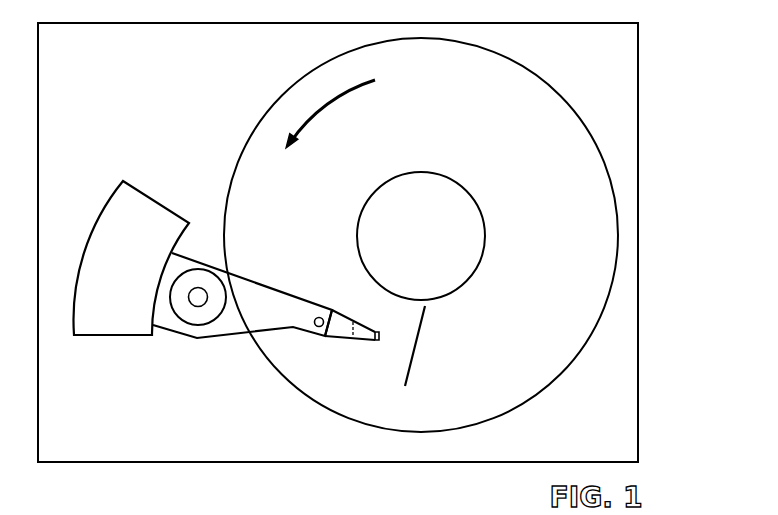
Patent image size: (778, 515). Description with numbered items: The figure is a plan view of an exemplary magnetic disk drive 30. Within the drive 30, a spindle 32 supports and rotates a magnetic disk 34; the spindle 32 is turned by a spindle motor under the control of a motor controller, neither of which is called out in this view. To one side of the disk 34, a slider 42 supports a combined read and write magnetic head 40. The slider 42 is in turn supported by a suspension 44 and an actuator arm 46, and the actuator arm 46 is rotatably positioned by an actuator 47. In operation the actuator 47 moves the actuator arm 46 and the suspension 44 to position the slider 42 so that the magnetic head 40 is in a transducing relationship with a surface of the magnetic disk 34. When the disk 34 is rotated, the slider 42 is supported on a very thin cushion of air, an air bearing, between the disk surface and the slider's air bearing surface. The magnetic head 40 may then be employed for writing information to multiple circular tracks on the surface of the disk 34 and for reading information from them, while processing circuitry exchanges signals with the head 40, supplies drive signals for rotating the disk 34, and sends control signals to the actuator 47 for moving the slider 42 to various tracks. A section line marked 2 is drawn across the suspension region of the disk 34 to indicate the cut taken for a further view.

The magnetic disk drive 30 is at (658, 60).
The spindle 32 is at (460, 183).
The magnetic disk 34 is at (538, 256).
The magnetic head 40 is at (378, 341).
The slider 42 is at (378, 331).
The suspension 44 is at (340, 338).
The actuator arm 46 is at (283, 297).
The actuator 47 is at (161, 209).
The section line 2- 2 is at (437, 315).